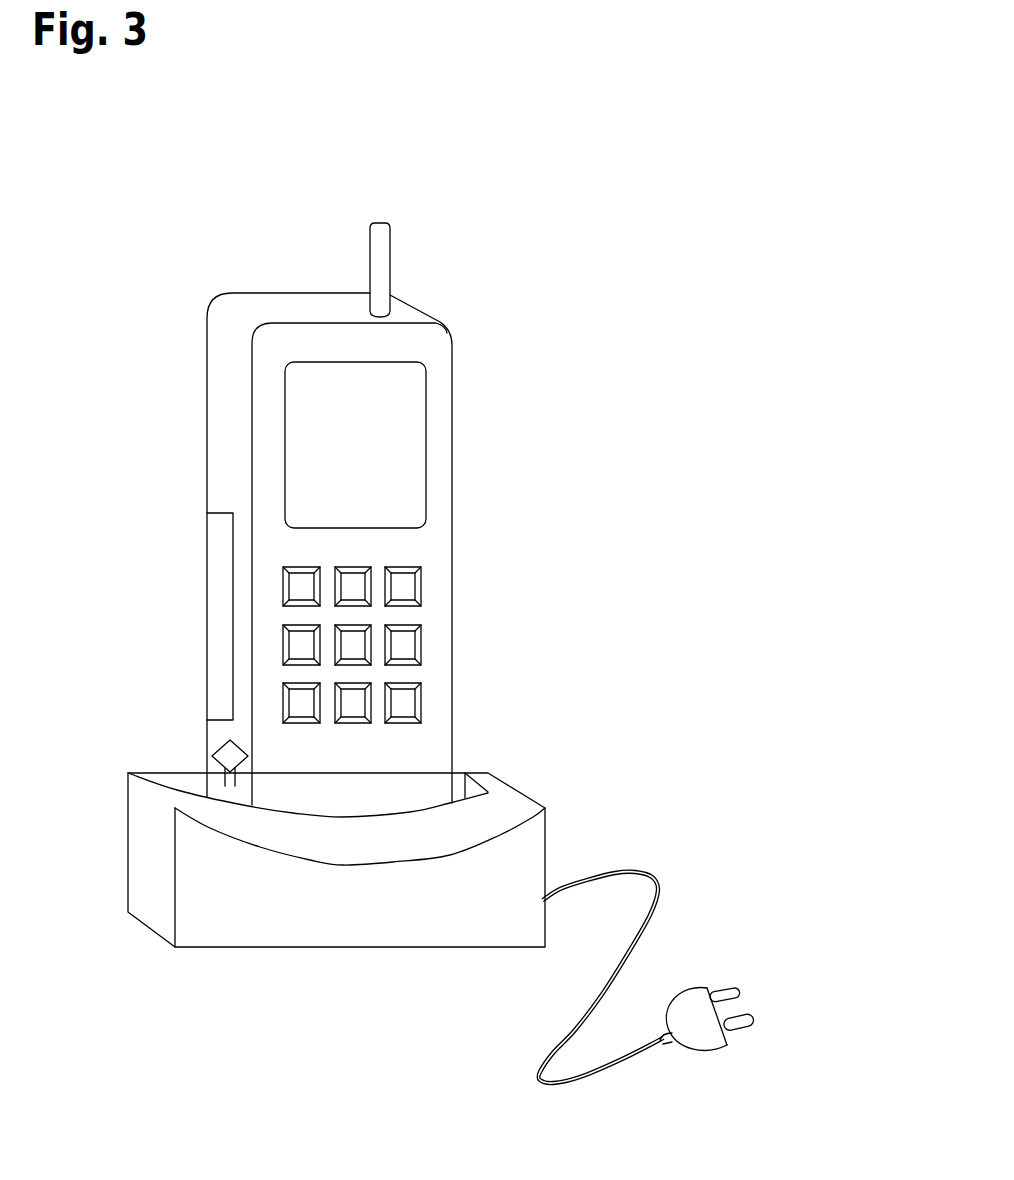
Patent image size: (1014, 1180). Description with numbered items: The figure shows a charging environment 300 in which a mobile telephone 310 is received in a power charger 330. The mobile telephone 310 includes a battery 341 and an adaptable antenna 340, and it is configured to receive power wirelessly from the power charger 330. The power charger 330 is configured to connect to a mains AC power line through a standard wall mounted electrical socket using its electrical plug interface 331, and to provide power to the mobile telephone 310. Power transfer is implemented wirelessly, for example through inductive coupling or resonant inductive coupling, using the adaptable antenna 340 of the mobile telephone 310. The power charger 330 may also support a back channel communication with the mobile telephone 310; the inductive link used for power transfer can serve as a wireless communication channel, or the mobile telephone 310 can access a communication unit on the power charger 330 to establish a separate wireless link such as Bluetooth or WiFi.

The charging environment 300 is at (580, 233).
The mobile telephone 310 is at (260, 293).
The power charger 330 is at (127, 831).
The electrical plug interface 331 is at (702, 1043).
The adaptable antenna 340 is at (218, 749).
The battery 341 is at (222, 628).